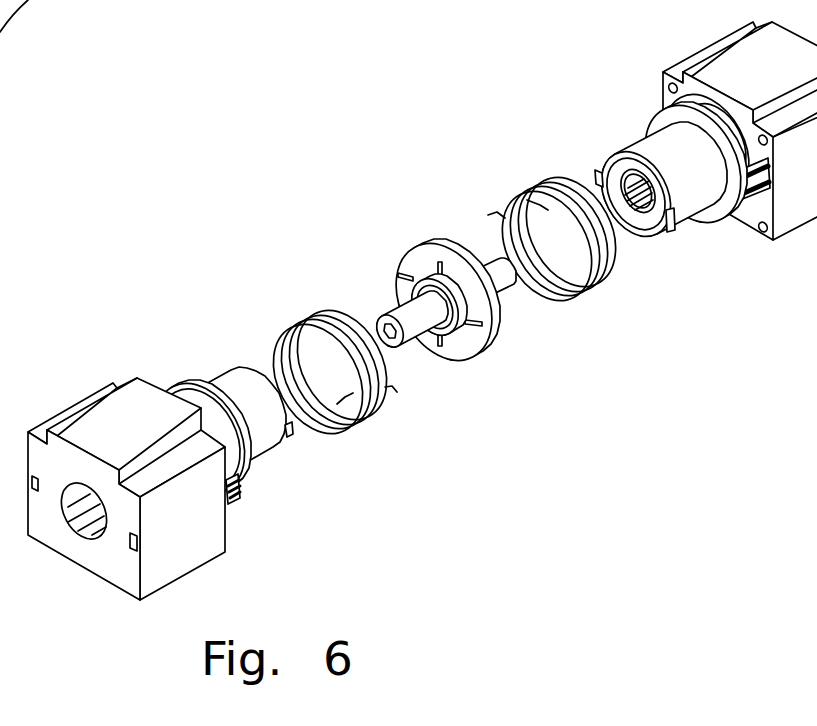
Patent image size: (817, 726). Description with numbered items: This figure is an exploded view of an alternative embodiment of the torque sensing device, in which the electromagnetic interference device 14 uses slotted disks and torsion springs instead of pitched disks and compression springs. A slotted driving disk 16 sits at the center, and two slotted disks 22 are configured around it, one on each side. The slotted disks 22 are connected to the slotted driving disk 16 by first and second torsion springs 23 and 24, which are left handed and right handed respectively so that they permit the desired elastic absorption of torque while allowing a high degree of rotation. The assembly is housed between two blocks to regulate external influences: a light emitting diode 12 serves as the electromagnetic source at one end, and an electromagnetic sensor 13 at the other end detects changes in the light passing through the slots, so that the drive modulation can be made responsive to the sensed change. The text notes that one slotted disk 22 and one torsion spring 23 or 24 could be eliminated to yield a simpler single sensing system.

The light emitting diode 12 is at (743, 210).
The electromagnetic sensor 13 is at (235, 493).
The electromagnetic interference device 14 is at (620, 78).
The slotted driving disk 16 is at (472, 360).
The slotted disks 22 is at (693, 233).
The first torsion spring 23 is at (605, 295).
The second torsion spring 24 is at (365, 422).